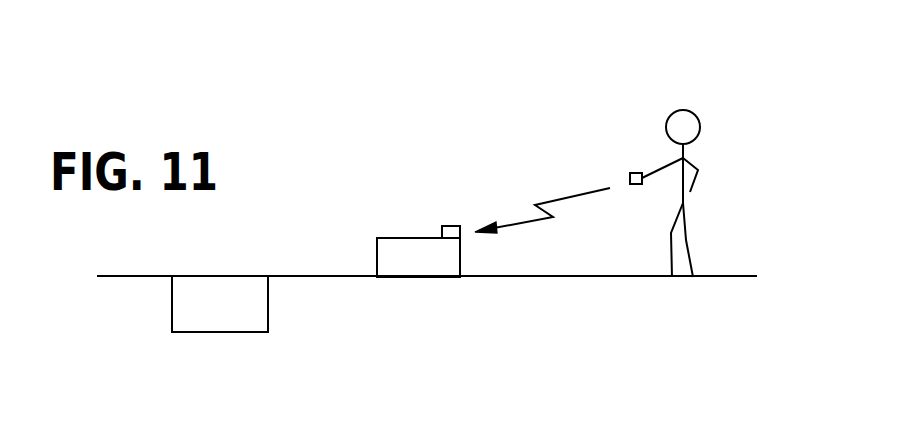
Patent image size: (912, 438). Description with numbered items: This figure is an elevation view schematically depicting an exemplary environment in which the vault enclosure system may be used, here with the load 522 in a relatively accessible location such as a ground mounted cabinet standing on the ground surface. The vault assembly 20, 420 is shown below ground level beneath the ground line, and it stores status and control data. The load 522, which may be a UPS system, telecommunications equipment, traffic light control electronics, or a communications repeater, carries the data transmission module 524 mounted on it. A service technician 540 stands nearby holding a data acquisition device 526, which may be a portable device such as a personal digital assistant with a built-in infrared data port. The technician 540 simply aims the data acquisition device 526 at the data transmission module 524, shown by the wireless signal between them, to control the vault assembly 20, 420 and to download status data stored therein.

The vault assembly 20 is at (213, 323).
The vault assembly 420 is at (220, 304).
The load 522 is at (397, 239).
The data transmission module 524 is at (447, 226).
The data acquisition device 526 is at (631, 172).
The service technician 540 is at (703, 165).